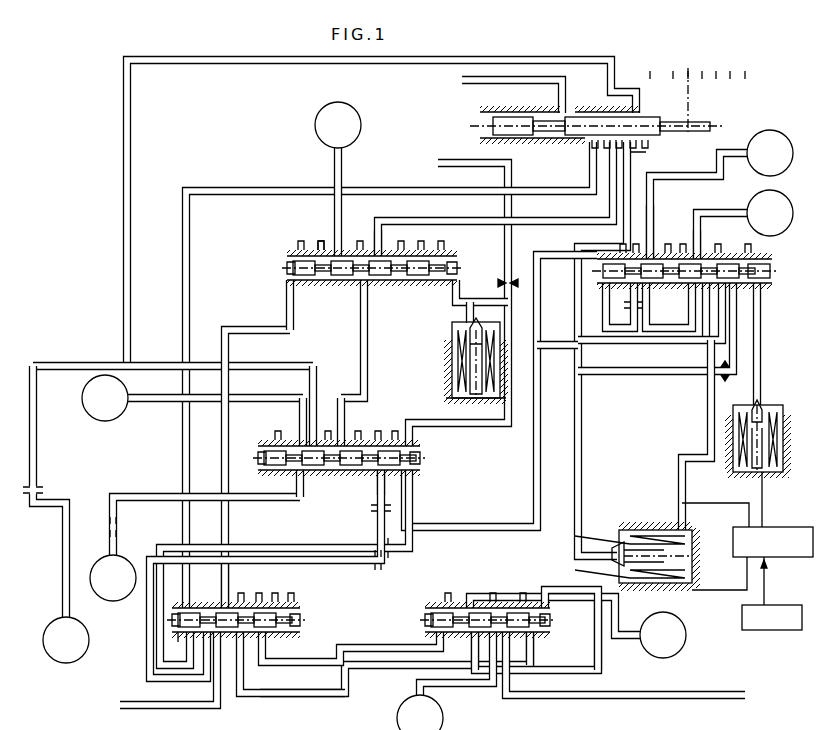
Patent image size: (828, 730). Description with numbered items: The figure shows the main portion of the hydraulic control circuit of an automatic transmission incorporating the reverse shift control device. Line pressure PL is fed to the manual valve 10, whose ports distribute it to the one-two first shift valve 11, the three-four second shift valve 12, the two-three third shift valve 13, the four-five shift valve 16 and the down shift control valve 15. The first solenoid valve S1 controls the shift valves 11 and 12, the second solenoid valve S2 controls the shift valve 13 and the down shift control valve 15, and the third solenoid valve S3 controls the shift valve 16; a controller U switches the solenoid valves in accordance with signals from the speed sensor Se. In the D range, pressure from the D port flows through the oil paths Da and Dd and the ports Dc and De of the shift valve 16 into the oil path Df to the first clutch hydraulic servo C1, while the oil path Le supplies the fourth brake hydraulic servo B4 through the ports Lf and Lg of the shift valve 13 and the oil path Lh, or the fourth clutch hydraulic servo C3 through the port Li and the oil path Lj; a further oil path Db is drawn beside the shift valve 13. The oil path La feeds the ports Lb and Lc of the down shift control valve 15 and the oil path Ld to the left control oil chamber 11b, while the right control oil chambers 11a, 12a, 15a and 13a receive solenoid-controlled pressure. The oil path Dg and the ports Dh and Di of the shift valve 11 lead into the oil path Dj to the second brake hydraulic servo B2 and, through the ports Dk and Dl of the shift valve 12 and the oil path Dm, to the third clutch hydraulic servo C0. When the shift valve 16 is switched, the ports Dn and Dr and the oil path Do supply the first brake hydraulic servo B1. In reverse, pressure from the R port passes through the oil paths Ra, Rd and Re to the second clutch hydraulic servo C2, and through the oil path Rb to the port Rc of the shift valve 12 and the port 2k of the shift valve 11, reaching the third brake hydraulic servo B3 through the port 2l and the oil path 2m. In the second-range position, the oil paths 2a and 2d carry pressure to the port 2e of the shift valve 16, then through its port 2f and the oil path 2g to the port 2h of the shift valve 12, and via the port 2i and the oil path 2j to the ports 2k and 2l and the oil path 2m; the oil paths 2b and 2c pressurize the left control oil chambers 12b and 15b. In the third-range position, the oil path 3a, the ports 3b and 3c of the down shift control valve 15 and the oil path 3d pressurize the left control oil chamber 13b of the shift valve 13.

The manual valve 10 is at (476, 116).
The first shift valve 11 is at (296, 250).
The right control oil chamber 11a is at (456, 262).
The left control oil chamber 11b is at (286, 268).
The second shift valve 12 is at (260, 440).
The right control oil chamber 12a is at (420, 456).
The left control oil chamber 12b is at (262, 466).
The third shift valve 13 is at (424, 604).
The right control oil chamber 13a is at (544, 618).
The left control oil chamber 13b is at (424, 622).
The down shift control valve 15 is at (304, 606).
The right control oil chamber 15a is at (300, 618).
The left control oil chamber 15b is at (172, 622).
The shift valve 16 is at (773, 259).
The oil path 2a is at (540, 432).
The oil path 2b is at (272, 516).
The oil path 2c is at (332, 560).
The oil path 2d is at (757, 314).
The port 2e is at (741, 289).
The port 2f is at (735, 300).
The oil path 2g is at (707, 432).
The port 2h is at (314, 480).
The port 2i is at (306, 442).
The oil path 2j is at (319, 362).
The port 2k is at (320, 286).
The port 2l is at (320, 250).
The oil path 2m is at (334, 170).
The oil path 3a is at (180, 234).
The port 3b is at (244, 638).
The port 3c is at (266, 642).
The oil path 3d is at (316, 692).
The first brake hydraulic servo B1 is at (770, 153).
The second brake hydraulic servo B2 is at (105, 398).
The third brake hydraulic servo B3 is at (338, 125).
The fourth brake hydraulic servo B4 is at (663, 635).
The third clutch hydraulic servo C0 is at (113, 578).
The first clutch hydraulic servo C1 is at (770, 213).
The second clutch hydraulic servo C2 is at (66, 640).
The fourth clutch hydraulic servo C3 is at (420, 712).
The oil path Da is at (580, 424).
The oil passage Db is at (595, 654).
The port Dc is at (710, 311).
The oil path Dd is at (669, 305).
The port De is at (696, 258).
The oil path Df is at (710, 214).
The oil path Dg is at (478, 222).
The port Dh is at (372, 246).
The port Di is at (362, 282).
The oil path Dj is at (365, 344).
The port Dk is at (341, 446).
The port Dl is at (368, 482).
The oil path Dm is at (208, 494).
The port Dn is at (620, 305).
The oil path Do is at (696, 174).
The port Dr is at (652, 254).
The oil path La is at (160, 704).
The port Lb is at (204, 638).
The port Lc is at (224, 604).
The oil path Ld is at (260, 328).
The oil path Le is at (656, 698).
The port Lf is at (466, 651).
The port Lg is at (470, 598).
The oil path Lh is at (546, 588).
The port Li is at (521, 649).
The oil path Lj is at (466, 684).
The line pressure PL is at (485, 258).
The oil path Ra is at (122, 164).
The oil path Rb is at (164, 366).
The port Rc is at (302, 444).
The oil path Rd is at (36, 444).
The oil path Re is at (62, 574).
The first solenoid valve S1 is at (448, 348).
The second solenoid valve S2 is at (628, 530).
The third solenoid valve S3 is at (770, 478).
The speed sensor Se is at (791, 630).
The controller U is at (792, 557).